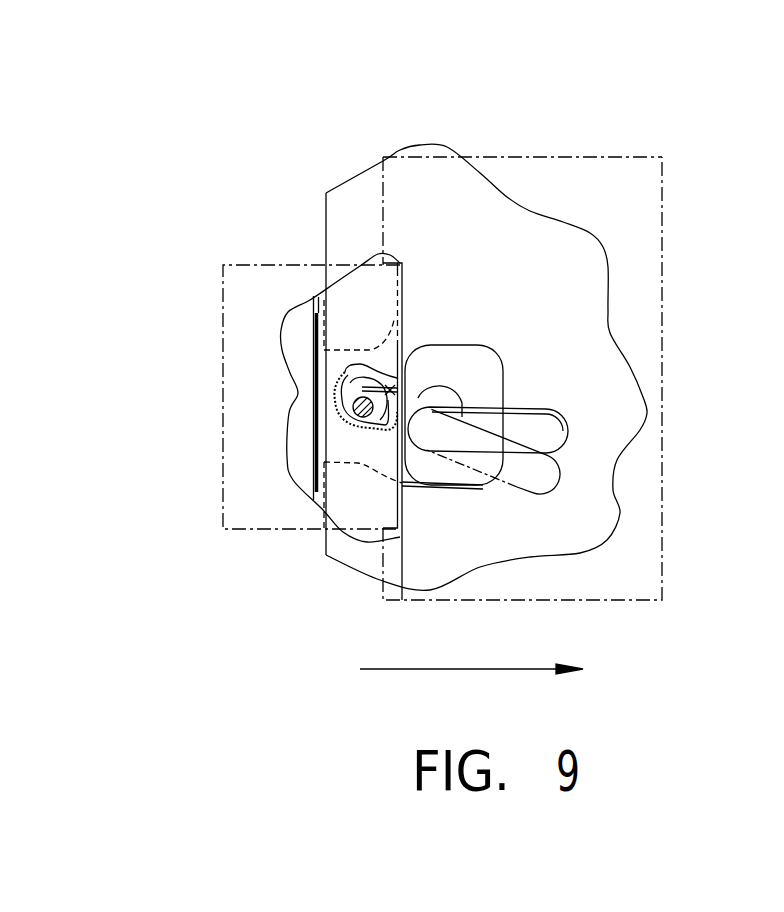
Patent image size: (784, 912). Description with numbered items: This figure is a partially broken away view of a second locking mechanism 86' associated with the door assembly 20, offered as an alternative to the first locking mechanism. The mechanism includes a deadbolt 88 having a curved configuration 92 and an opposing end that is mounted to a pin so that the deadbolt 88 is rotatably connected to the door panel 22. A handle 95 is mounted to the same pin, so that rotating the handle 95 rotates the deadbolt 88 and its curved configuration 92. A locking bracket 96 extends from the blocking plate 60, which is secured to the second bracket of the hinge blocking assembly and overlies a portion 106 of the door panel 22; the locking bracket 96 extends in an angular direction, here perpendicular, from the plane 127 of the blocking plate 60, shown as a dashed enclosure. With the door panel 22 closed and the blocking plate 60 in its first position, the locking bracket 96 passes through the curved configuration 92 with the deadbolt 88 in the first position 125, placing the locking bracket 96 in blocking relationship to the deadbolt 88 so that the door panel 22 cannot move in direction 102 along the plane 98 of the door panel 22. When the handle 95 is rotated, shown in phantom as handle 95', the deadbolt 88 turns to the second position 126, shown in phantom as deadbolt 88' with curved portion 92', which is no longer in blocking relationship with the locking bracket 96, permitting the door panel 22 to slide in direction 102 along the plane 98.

The door assembly 20 is at (542, 81).
The second locking mechanism 86' is at (581, 335).
The plane of door panel 98 is at (623, 200).
The door panel 22 is at (567, 532).
The blocking plate 60 is at (305, 313).
The plane of blocking plate 127 is at (237, 302).
The portion of door panel 106 is at (353, 237).
The curved configuration 92 is at (291, 398).
The curved portion (in phantom) 92' is at (363, 414).
The deadbolt (in phantom) 88' is at (492, 415).
The handle 95 is at (510, 428).
The handle (in phantom) 95' is at (525, 451).
The deadbolt 88 is at (407, 389).
The first position 125 is at (397, 354).
The locking bracket 96 is at (412, 405).
The second position 126 is at (459, 494).
The direction 102 is at (453, 672).